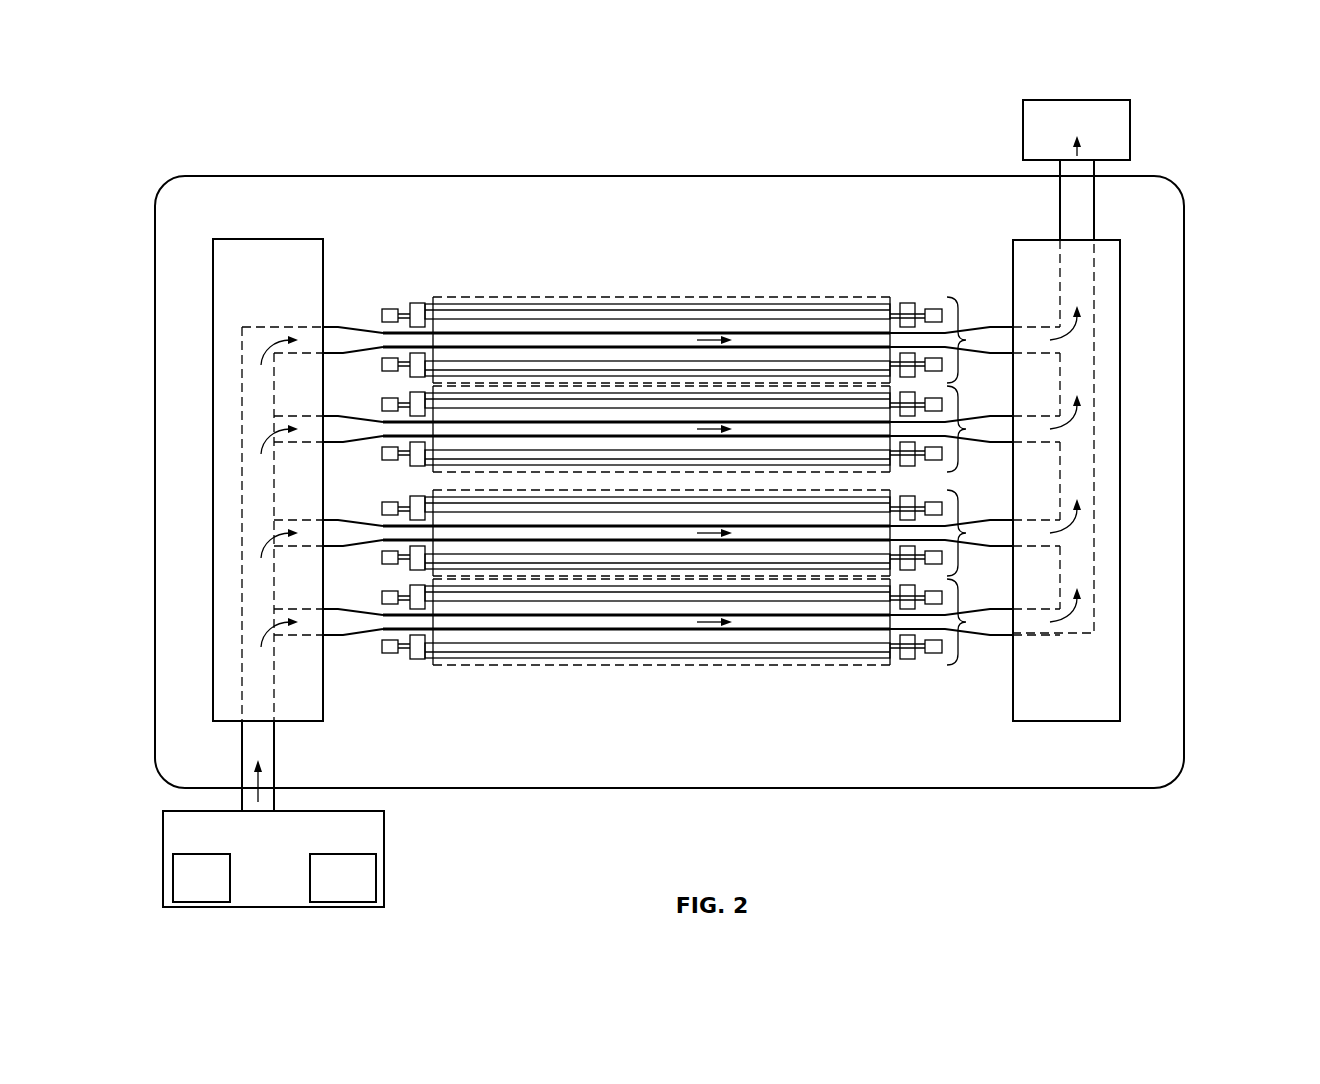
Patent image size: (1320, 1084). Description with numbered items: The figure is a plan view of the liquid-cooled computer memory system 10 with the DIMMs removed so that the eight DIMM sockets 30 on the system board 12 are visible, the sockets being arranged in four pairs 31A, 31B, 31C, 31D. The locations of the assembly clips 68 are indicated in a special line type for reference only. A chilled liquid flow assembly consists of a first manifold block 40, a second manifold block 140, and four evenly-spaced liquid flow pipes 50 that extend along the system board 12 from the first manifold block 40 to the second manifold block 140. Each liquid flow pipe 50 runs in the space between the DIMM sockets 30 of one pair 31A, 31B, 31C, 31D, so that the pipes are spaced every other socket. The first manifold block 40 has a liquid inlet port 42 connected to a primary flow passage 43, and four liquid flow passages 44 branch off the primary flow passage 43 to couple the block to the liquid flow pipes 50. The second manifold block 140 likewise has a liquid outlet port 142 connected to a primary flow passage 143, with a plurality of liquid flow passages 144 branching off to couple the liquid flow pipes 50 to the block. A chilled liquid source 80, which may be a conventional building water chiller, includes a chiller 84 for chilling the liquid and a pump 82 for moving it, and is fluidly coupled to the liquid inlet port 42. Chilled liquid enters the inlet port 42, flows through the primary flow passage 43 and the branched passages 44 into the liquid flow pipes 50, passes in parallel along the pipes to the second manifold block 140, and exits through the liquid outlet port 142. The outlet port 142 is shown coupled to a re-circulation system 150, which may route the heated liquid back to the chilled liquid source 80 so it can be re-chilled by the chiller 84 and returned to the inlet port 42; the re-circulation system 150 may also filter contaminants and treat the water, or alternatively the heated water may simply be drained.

The liquid-cooled computer memory system 10 is at (708, 150).
The system board 12 is at (848, 190).
The DIMM socket 30 is at (662, 297).
The pair of DIMM sockets 31A is at (671, 311).
The pair of DIMM sockets 31B is at (671, 426).
The pair of DIMM sockets 31C is at (671, 530).
The pair of DIMM sockets 31D is at (671, 619).
The first manifold block 40 is at (213, 280).
The liquid inlet port 42 is at (274, 782).
The primary flow passage 43 is at (242, 735).
The liquid flow passage 44 is at (298, 545).
The liquid flow pipe 50 is at (332, 416).
The assembly clip 68 is at (790, 385).
The chilled liquid source 80 is at (384, 848).
The pump 82 is at (173, 885).
The chiller 84 is at (376, 880).
The second manifold block 140 is at (1120, 333).
The liquid outlet port 142 is at (1094, 177).
The primary flow passage 143 is at (1094, 403).
The liquid flow passage 144 is at (1038, 518).
The re-circulation system 150 is at (1130, 128).